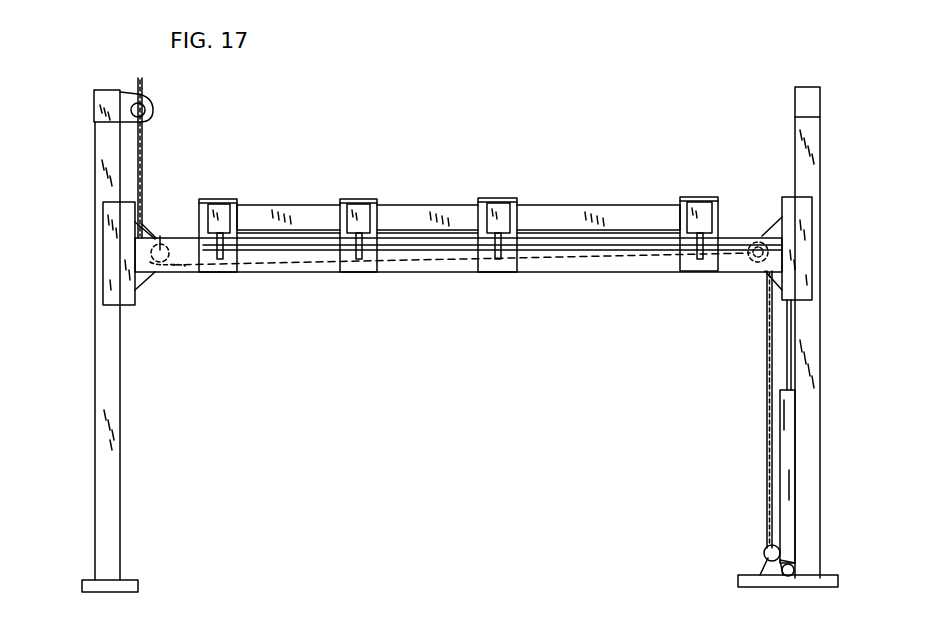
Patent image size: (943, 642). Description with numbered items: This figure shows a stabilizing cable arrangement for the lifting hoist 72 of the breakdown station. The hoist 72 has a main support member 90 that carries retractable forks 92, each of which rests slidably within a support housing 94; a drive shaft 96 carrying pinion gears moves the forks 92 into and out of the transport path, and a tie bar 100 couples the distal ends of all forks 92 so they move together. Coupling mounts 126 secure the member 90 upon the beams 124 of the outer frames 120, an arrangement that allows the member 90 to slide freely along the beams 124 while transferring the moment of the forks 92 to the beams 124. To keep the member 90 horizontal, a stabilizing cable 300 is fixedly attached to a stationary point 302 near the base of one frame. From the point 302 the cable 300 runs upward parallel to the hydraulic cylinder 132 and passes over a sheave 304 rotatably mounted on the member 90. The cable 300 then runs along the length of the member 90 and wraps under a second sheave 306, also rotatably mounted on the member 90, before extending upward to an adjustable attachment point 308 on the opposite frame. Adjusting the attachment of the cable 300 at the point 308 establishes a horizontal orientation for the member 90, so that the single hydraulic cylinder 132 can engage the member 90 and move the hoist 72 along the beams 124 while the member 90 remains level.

The lifting hoist 72 is at (504, 137).
The support member 90 is at (605, 272).
The retractable forks 92 is at (353, 218).
The support housing 94 is at (355, 200).
The drive shaft 96 is at (298, 253).
The tie bar 100 is at (415, 200).
The outer frames 120 is at (108, 88).
The beams 124 is at (95, 162).
The coupling mounts 126 is at (135, 306).
The hydraulic cylinder 132 is at (786, 444).
The stabilizing cable 300 is at (145, 162).
The stationary point 302 is at (765, 553).
The sheave 304 is at (742, 263).
The second sheave 306 is at (183, 272).
The adjustable attachment point 308 is at (152, 110).